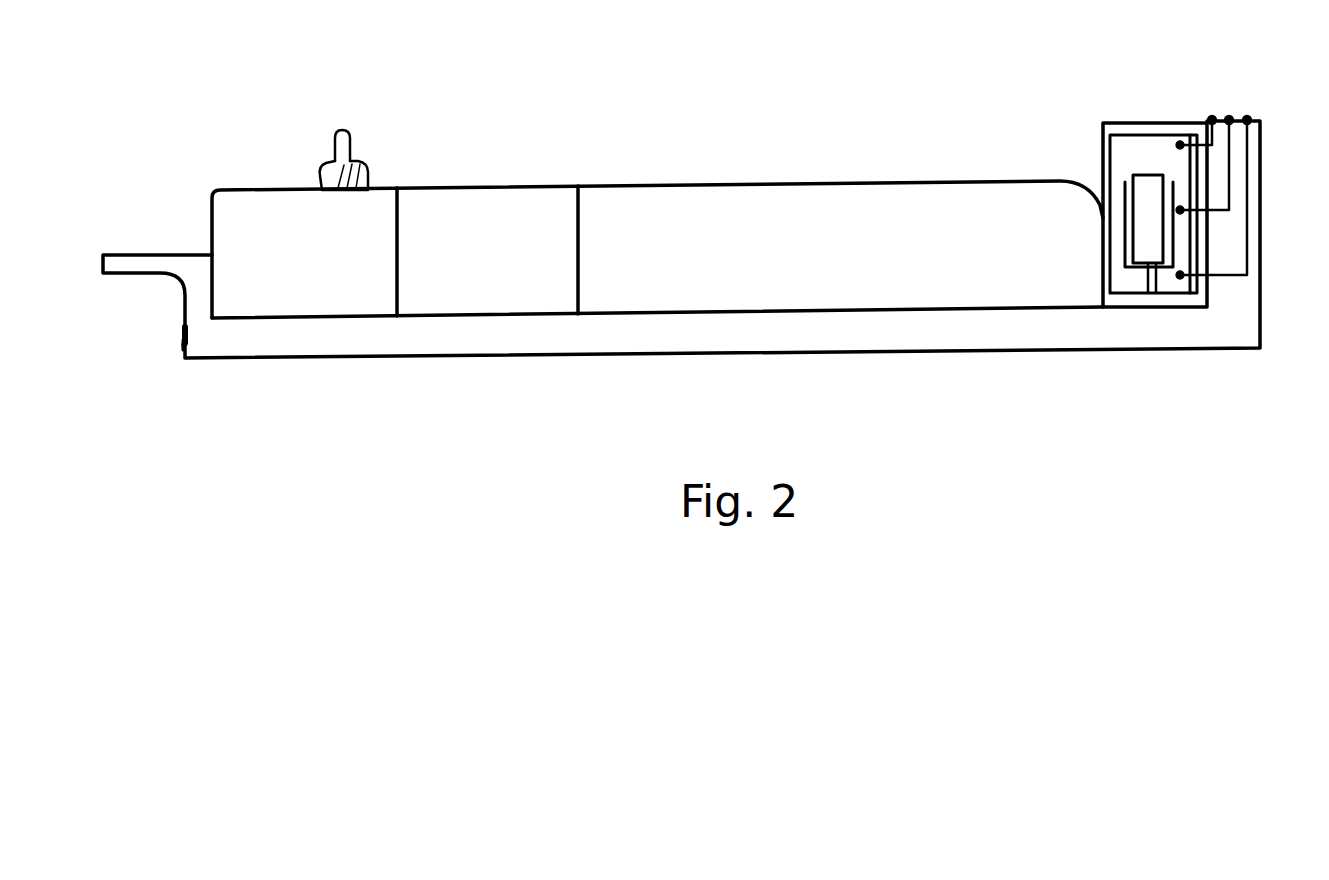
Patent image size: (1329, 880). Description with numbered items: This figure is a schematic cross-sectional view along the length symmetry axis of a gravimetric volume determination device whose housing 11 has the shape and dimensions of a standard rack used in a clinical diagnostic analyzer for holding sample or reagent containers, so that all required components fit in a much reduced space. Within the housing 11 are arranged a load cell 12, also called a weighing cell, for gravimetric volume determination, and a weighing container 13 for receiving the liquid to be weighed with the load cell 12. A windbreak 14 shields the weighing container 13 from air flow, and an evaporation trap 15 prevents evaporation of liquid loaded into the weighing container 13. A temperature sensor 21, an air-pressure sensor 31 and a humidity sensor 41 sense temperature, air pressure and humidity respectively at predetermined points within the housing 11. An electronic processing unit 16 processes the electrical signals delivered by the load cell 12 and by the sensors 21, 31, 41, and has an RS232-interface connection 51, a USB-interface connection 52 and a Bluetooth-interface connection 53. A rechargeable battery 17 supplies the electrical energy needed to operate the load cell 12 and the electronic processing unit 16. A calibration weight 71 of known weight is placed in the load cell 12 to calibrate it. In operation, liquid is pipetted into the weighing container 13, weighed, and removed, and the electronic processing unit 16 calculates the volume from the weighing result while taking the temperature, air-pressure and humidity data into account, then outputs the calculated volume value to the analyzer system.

The housing 11 is at (380, 343).
The load cell 12 is at (757, 210).
The weighing container 13 is at (1145, 192).
The windbreak 14 is at (1103, 125).
The evaporation trap 15 is at (1120, 145).
The electronic processing unit 16 is at (478, 215).
The rechargeable battery 17 is at (288, 198).
The temperature sensor 21 is at (1229, 118).
The air-pressure sensor 31 is at (1250, 118).
The humidity sensor 41 is at (1212, 118).
The RS232-interface connection 51 is at (183, 333).
The USB-interface connection 52 is at (183, 342).
The Bluetooth-interface connection 53 is at (183, 346).
The calibration weight 71 is at (358, 162).